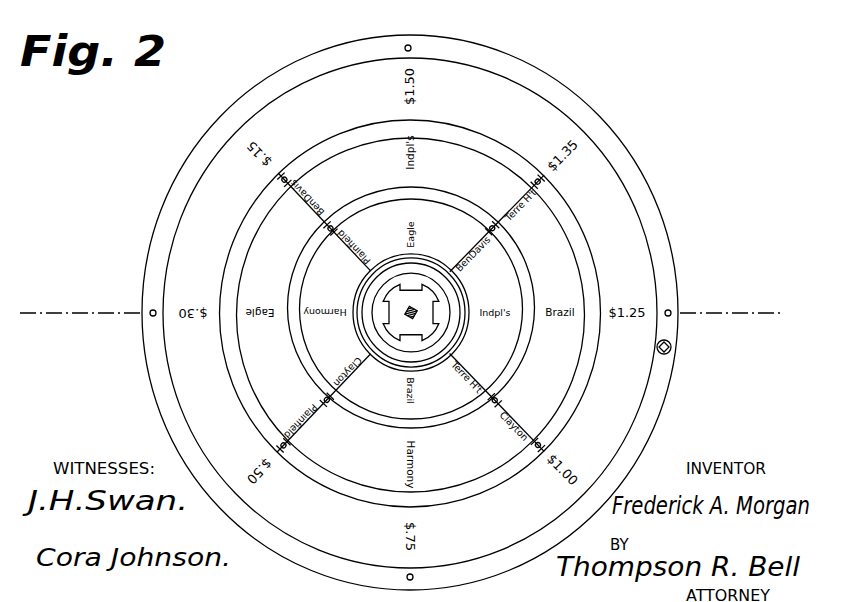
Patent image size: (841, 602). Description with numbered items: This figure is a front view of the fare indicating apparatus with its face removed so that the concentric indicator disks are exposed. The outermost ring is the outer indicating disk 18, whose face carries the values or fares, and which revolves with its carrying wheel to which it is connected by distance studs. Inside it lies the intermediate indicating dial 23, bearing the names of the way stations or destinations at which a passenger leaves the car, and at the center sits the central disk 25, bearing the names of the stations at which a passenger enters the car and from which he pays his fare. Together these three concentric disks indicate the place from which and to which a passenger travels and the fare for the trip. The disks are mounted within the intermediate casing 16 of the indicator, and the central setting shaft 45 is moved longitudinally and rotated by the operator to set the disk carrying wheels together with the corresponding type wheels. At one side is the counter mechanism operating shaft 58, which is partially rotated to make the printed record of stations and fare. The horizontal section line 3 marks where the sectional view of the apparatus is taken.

The section line 3— 3 is at (404, 306).
The intermediate casing 16 is at (680, 303).
The outer indicating disk 18 is at (410, 312).
The intermediate indicating dial 23 is at (410, 313).
The central disk 25 is at (411, 307).
The setting shaft 45 is at (407, 315).
The counter mechanism operating shaft 58 is at (672, 347).